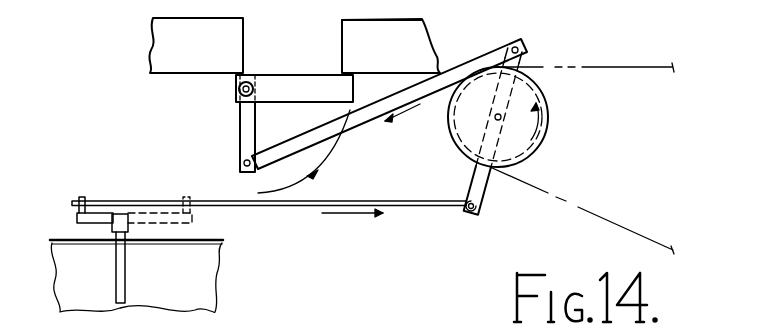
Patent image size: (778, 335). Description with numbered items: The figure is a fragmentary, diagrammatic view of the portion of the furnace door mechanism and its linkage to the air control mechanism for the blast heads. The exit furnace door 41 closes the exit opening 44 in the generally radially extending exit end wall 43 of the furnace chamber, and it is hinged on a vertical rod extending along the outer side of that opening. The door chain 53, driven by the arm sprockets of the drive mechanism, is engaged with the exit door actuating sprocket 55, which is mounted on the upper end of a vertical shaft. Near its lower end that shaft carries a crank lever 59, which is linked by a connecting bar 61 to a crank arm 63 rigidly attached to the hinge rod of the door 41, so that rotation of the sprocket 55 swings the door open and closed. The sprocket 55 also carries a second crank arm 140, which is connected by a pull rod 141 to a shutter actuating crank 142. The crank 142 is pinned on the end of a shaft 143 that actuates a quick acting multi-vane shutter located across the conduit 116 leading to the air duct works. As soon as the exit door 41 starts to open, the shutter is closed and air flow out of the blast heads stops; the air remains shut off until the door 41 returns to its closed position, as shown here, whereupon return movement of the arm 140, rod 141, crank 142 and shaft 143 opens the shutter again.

The exit furnace door 41 is at (312, 74).
The exit end wall 43 is at (373, 20).
The exit opening 44 is at (342, 37).
The door chain 53 is at (605, 68).
The exit door actuating sprocket 55 is at (543, 145).
The crank lever 59 is at (522, 55).
The connecting bar 61 is at (335, 138).
The crank arm 63 is at (238, 128).
The conduit 116 is at (70, 240).
The second crank arm 140 is at (487, 193).
The pull rod 141 is at (368, 203).
The shutter actuating crank 142 is at (80, 197).
The shaft 143 is at (125, 275).